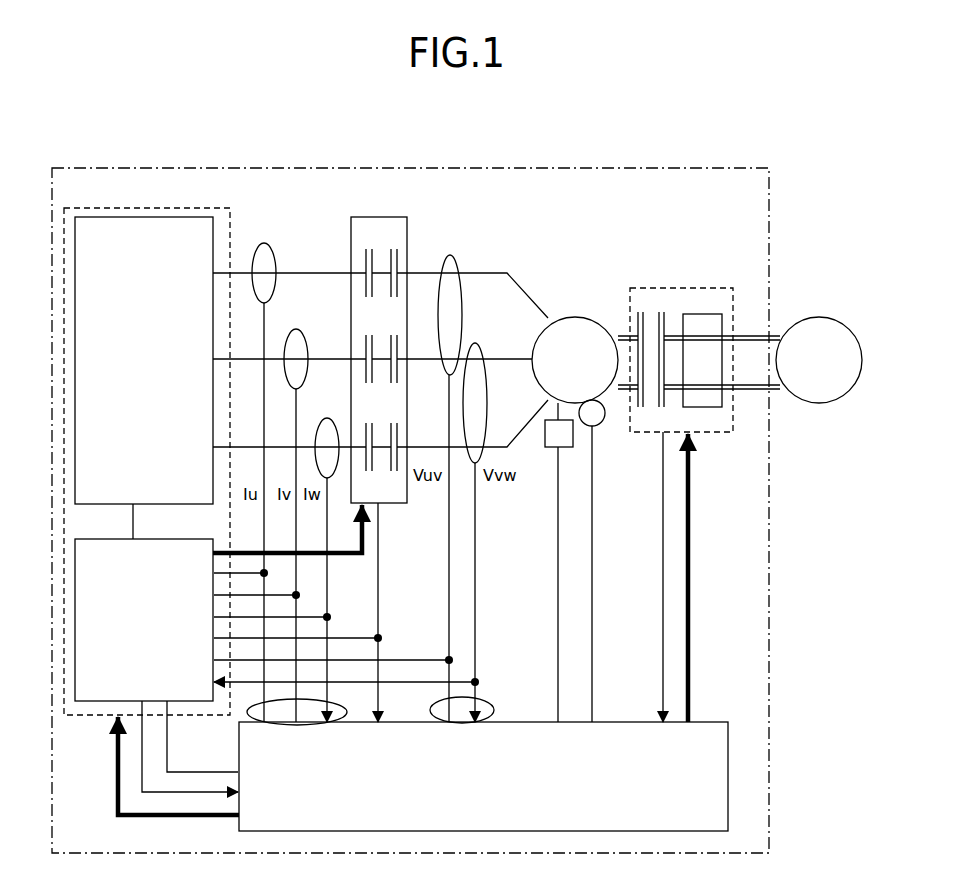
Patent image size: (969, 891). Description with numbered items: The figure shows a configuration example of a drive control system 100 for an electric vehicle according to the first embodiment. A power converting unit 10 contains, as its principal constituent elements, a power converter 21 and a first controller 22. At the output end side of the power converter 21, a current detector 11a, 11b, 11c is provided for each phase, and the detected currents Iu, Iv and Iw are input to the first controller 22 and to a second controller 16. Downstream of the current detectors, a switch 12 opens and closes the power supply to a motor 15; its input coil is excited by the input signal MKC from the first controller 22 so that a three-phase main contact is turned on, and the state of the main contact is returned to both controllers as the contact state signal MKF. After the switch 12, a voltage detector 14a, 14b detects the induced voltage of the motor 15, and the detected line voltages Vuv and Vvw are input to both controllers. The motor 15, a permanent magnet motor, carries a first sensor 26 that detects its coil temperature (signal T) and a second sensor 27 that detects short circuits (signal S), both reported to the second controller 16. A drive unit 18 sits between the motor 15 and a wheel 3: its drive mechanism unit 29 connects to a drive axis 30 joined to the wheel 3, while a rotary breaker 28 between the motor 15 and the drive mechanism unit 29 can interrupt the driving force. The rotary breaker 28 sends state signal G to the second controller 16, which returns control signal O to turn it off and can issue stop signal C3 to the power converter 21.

The drive control system 100 is at (700, 168).
The power converting unit 10 is at (112, 208).
The power converter 21 is at (170, 217).
The first controller 22 is at (163, 539).
The current detector 11a is at (276, 268).
The current detector 11b is at (310, 321).
The current detector 11c is at (327, 418).
The switch 12 is at (408, 226).
The voltage detector 14a is at (462, 305).
The voltage detector 14b is at (487, 393).
The motor 15 is at (578, 317).
The second controller 16 is at (712, 722).
The drive unit 18 is at (703, 288).
The first sensor 26 is at (549, 447).
The second sensor 27 is at (600, 424).
The rotary breaker 28 is at (652, 407).
The drive mechanism unit 29 is at (722, 407).
The drive axis 30 is at (752, 380).
The wheel 3 is at (818, 317).